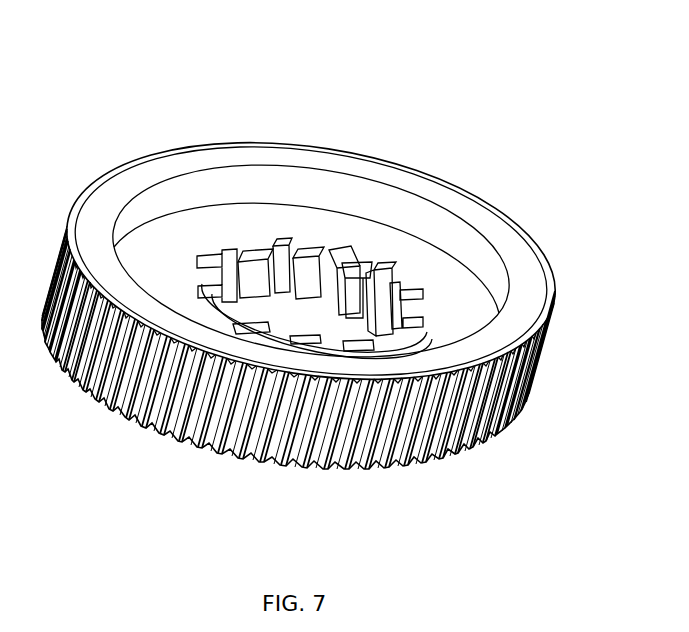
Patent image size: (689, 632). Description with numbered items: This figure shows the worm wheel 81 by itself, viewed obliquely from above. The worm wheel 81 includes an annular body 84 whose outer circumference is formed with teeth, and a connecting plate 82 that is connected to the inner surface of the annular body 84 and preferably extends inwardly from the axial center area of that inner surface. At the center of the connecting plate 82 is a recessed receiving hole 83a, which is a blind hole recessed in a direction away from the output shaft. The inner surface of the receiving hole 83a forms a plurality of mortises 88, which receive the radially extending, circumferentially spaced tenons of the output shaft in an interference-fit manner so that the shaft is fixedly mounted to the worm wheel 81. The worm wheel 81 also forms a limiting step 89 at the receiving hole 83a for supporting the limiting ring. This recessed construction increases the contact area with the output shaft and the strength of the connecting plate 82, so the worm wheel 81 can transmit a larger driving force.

The worm wheel 81 is at (281, 97).
The annular body 84 is at (352, 155).
The connecting plate 82 is at (363, 232).
The limiting step 89 is at (260, 253).
The mortises 88 is at (380, 265).
The receiving hole 83a is at (330, 327).